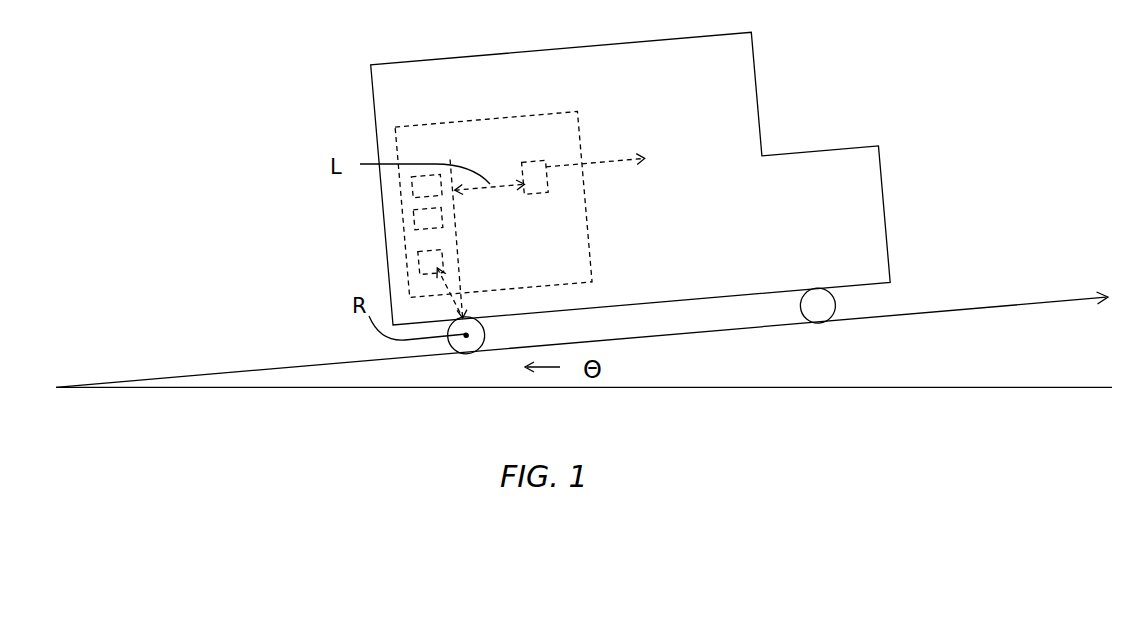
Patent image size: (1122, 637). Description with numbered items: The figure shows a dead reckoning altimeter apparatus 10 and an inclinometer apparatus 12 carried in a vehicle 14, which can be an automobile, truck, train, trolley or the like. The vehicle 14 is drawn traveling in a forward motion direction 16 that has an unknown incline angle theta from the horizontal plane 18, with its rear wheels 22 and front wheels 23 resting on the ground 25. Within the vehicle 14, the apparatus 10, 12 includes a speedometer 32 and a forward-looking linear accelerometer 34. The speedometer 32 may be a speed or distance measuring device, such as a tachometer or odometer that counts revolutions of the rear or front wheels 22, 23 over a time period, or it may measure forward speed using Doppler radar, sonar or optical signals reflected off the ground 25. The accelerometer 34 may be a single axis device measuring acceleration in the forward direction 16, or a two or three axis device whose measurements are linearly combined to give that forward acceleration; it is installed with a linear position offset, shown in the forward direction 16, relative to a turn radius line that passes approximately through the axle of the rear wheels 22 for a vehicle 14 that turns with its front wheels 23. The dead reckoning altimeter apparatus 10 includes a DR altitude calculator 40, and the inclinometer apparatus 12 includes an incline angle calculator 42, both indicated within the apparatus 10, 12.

The dead reckoning altimeter apparatus 10 is at (476, 172).
The inclinometer apparatus 12 is at (413, 127).
The vehicle 14 is at (797, 157).
The forward motion direction 16 is at (582, 204).
The horizontal plane 18 is at (990, 387).
The rear wheels 22 is at (487, 333).
The front wheels 23 is at (840, 308).
The ground 25 is at (913, 313).
The speedometer 32 is at (420, 258).
The forward-looking linear accelerometer 34 is at (518, 160).
The DR altitude calculator 40 is at (412, 189).
The incline angle calculator 42 is at (415, 220).